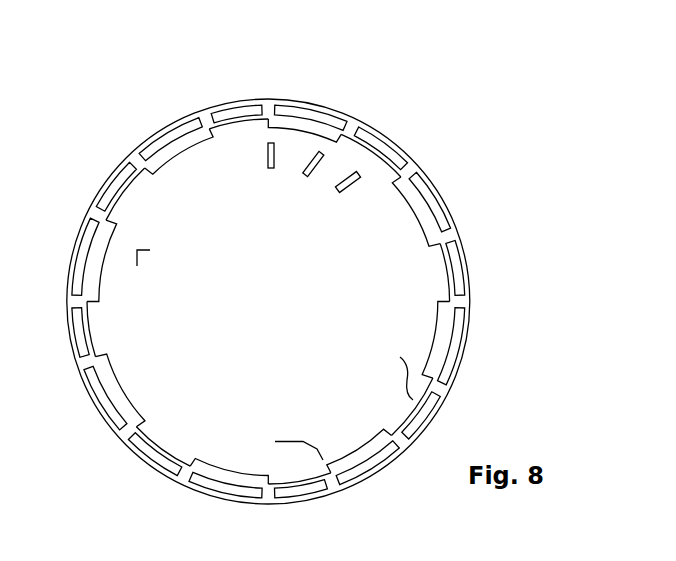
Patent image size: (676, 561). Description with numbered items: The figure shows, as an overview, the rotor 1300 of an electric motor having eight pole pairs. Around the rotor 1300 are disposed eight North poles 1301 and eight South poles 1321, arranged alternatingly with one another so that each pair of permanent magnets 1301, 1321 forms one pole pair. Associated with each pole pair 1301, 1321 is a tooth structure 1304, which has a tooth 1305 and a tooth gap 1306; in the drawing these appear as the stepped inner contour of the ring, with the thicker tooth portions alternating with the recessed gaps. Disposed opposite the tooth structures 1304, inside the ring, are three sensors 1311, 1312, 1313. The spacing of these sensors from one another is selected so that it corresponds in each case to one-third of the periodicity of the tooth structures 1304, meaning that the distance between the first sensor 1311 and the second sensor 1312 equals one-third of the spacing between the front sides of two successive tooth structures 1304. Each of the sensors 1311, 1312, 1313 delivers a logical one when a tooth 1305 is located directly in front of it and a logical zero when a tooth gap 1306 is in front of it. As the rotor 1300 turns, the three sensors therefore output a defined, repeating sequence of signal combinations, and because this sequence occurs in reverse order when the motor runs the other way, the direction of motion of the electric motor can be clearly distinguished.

The rotor 1300 is at (197, 108).
The North pole 1301 is at (315, 108).
The South pole 1321 is at (387, 150).
The tooth structure 1304 is at (140, 257).
The tooth 1305 is at (238, 471).
The tooth gap 1306 is at (437, 299).
The first sensor 1311 is at (263, 167).
The second sensor 1312 is at (307, 175).
The third sensor 1313 is at (339, 195).